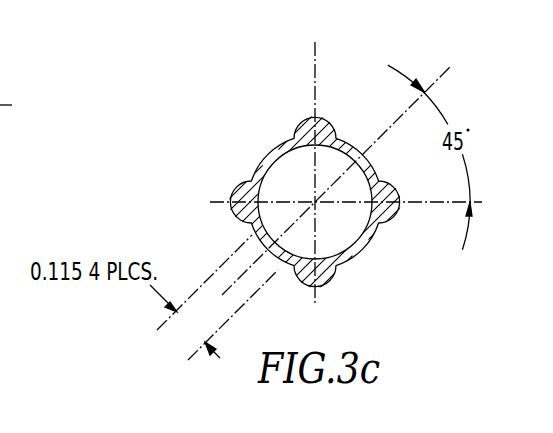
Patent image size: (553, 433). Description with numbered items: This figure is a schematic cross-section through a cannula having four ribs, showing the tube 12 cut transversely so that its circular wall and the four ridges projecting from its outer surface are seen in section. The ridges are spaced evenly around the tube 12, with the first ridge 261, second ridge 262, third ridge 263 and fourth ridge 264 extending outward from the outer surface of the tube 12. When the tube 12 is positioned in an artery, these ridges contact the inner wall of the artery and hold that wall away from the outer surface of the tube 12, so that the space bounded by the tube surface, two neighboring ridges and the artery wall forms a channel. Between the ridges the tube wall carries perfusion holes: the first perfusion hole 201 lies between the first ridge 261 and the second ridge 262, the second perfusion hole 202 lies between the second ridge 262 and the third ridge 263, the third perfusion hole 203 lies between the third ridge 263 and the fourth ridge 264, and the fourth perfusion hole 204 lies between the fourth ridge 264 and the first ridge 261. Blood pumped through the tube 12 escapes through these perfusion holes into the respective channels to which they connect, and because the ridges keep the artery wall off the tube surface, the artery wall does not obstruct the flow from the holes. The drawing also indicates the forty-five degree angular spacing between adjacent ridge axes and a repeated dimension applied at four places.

The tube 12 is at (283, 116).
The first perfusion hole 201 is at (268, 150).
The second perfusion hole 202 is at (350, 145).
The third perfusion hole 203 is at (362, 250).
The fourth perfusion hole 204 is at (253, 245).
The first ridge 261 is at (240, 184).
The second ridge 262 is at (326, 118).
The third ridge 263 is at (399, 213).
The fourth ridge 264 is at (318, 288).